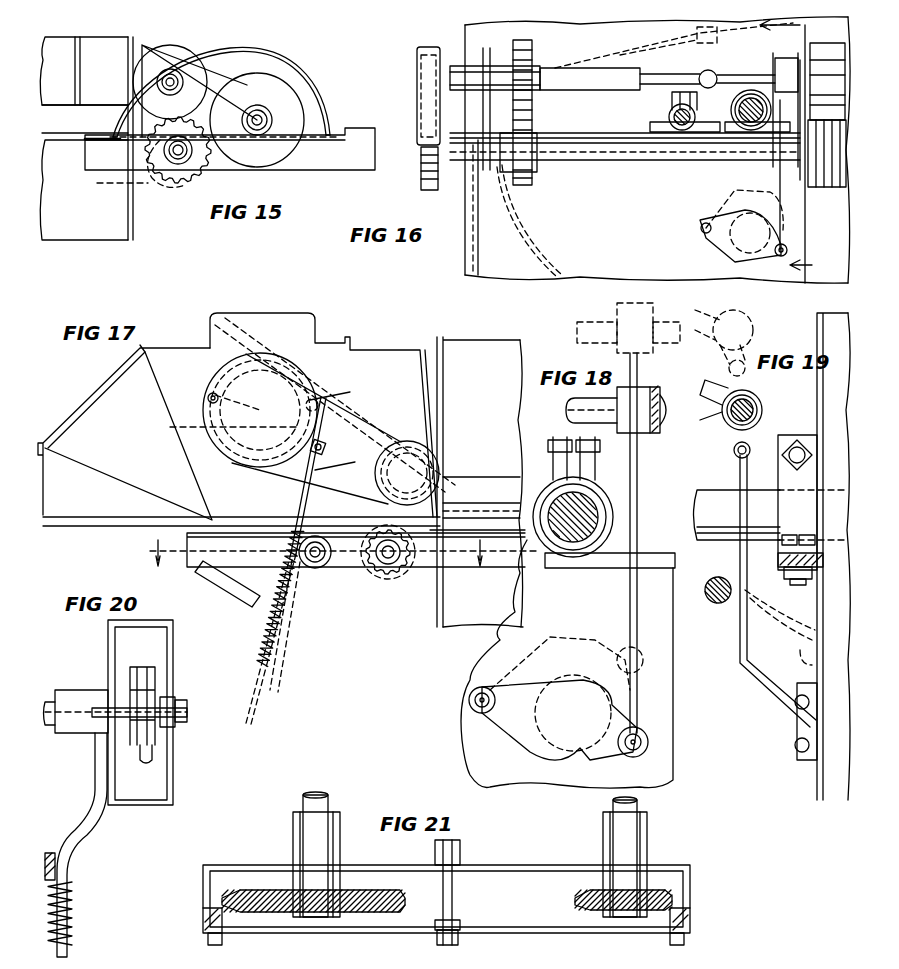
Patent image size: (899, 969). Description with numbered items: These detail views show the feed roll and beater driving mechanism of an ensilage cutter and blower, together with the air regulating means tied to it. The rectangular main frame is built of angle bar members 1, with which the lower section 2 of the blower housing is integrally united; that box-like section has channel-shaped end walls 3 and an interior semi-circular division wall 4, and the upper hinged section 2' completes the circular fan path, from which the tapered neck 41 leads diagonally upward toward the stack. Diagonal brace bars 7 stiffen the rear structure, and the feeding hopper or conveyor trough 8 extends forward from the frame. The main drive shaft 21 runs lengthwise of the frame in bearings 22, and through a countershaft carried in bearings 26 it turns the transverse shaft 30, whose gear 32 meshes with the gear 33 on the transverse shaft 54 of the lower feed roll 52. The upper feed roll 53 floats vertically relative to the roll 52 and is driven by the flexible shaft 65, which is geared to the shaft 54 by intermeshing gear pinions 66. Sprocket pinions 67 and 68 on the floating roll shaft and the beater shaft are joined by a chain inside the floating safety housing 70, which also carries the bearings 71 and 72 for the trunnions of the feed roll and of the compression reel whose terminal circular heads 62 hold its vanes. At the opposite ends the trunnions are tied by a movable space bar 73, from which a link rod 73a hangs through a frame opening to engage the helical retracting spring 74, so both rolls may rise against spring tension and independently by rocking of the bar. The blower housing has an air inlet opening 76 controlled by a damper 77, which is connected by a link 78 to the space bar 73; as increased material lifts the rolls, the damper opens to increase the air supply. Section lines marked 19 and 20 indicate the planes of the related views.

In FIG. 15, the angle bar members of the main frame 1 is at (358, 155).
In FIG. 17, the angle bar members of the main frame 1 is at (150, 532).
In FIG. 15, the lower section of the blower housing 2 is at (139, 138).
In FIG. 16, the lower section of the blower housing 2 is at (625, 225).
In FIG. 18, the lower section of the blower housing 2 is at (567, 664).
In FIG. 19, the lower section of the blower housing 2 is at (811, 821).
In FIG. 17, the upper hinged section of the blower housing 2' is at (480, 469).
In FIG. 19, the upper hinged section of the blower housing 2' is at (819, 556).
In FIG. 15, the end walls 3 is at (84, 172).
In FIG. 16, the end walls 3 is at (470, 238).
In FIG. 16, the division wall 4 is at (532, 230).
In FIG. 17, the diagonal brace bars 7 is at (232, 590).
In FIG. 16, the feeding hopper or conveyor trough 8 is at (794, 133).
In FIG. 17, the feeding hopper or conveyor trough 8 is at (239, 435).
In FIG. 16, the section line 19 is at (797, 152).
In FIG. 17, the rod 20 is at (338, 394).
In FIG. 16, the main drive shaft 21 is at (745, 130).
In FIG. 17, the main drive shaft 21 is at (454, 494).
In FIG. 18, the main drive shaft 21 is at (578, 560).
In FIG. 19, the main drive shaft 21 is at (712, 500).
In FIG. 17, the bearings 22 is at (335, 553).
In FIG. 19, the bearings 22 is at (813, 510).
In FIG. 16, the bearings 26 is at (668, 114).
In FIG. 15, the transverse shaft 30 is at (268, 118).
In FIG. 16, the transverse shaft 30 is at (445, 125).
In FIG. 15, the gear 32 is at (292, 152).
In FIG. 16, the gear 32 is at (422, 84).
In FIG. 15, the gear 33 is at (190, 195).
In FIG. 16, the gear 33 is at (422, 185).
In FIG. 15, the tapered neck 41 is at (84, 71).
In FIG. 16, the feed roll 52 is at (828, 189).
In FIG. 16, the feed roll 53 is at (822, 62).
In FIG. 15, the transverse shaft 54 is at (178, 165).
In FIG. 17, the transverse shaft 54 is at (385, 575).
In FIG. 19, the transverse shaft 54 is at (717, 605).
In FIG. 17, the terminal circular heads 62 is at (335, 405).
In FIG. 16, the flexible shaft 65 is at (600, 80).
In FIG. 18, the flexible shaft 65 is at (570, 410).
In FIG. 15, the intermeshing gear pinions 66 is at (196, 50).
In FIG. 16, the intermeshing gear pinions 66 is at (535, 100).
In FIG. 17, the sprocket pinion 67 is at (412, 452).
In FIG. 20, the sprocket pinion 67 is at (145, 762).
In FIG. 21, the sprocket pinion 67 is at (578, 905).
In FIG. 17, the sprocket pinion 68 is at (212, 430).
In FIG. 21, the sprocket pinion 68 is at (407, 905).
In FIG. 17, the floating safety housing 70 is at (275, 340).
In FIG. 20, the floating safety housing 70 is at (140, 808).
In FIG. 21, the floating safety housing 70 is at (518, 865).
In FIG. 20, the bearing 71 is at (70, 735).
In FIG. 21, the bearing 71 is at (650, 840).
In FIG. 21, the bearing 72 is at (340, 850).
In FIG. 20, the space bar 73 is at (82, 835).
In FIG. 17, the link rod 73a is at (282, 658).
In FIG. 17, the helical retracting spring 74 is at (262, 637).
In FIG. 20, the helical retracting spring 74 is at (78, 915).
In FIG. 16, the air inlet opening 76 is at (752, 268).
In FIG. 18, the air inlet opening 76 is at (553, 768).
In FIG. 16, the damper 77 is at (735, 255).
In FIG. 18, the damper 77 is at (580, 680).
In FIG. 19, the damper 77 is at (816, 626).
In FIG. 16, the link 78 is at (779, 180).
In FIG. 18, the link 78 is at (639, 622).
In FIG. 19, the link 78 is at (766, 690).